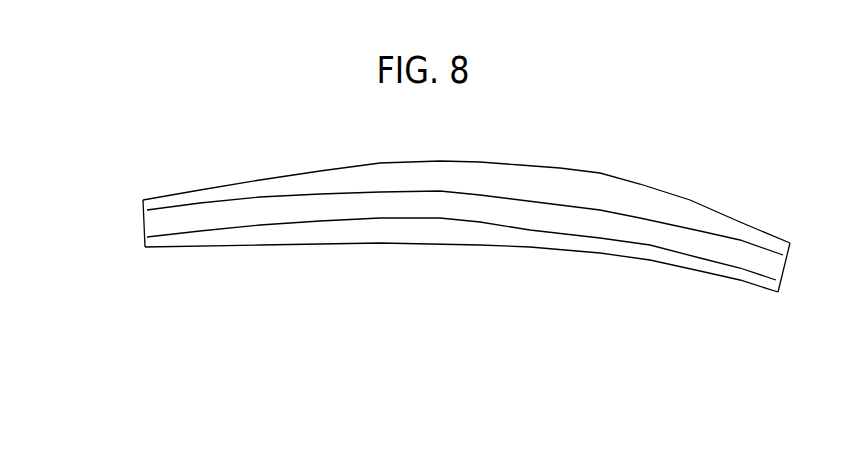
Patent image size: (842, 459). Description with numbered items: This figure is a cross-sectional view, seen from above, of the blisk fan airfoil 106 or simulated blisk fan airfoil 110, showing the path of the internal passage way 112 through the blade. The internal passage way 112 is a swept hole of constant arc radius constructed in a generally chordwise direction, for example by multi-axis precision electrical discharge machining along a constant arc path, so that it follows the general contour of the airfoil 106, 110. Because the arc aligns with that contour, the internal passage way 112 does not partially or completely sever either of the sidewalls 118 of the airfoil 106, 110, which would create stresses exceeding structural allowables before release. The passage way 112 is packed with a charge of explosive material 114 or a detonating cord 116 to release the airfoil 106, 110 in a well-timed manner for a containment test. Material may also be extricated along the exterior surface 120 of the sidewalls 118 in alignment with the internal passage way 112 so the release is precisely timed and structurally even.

The blisk fan airfoil 106 is at (482, 187).
The simulated blisk fan airfoil 110 is at (466, 197).
The internal passage way 112 is at (665, 233).
The explosive material 114 is at (581, 269).
The detonating cord 116 is at (565, 217).
The sidewalls 118 is at (345, 190).
The exterior surface 120 is at (288, 170).